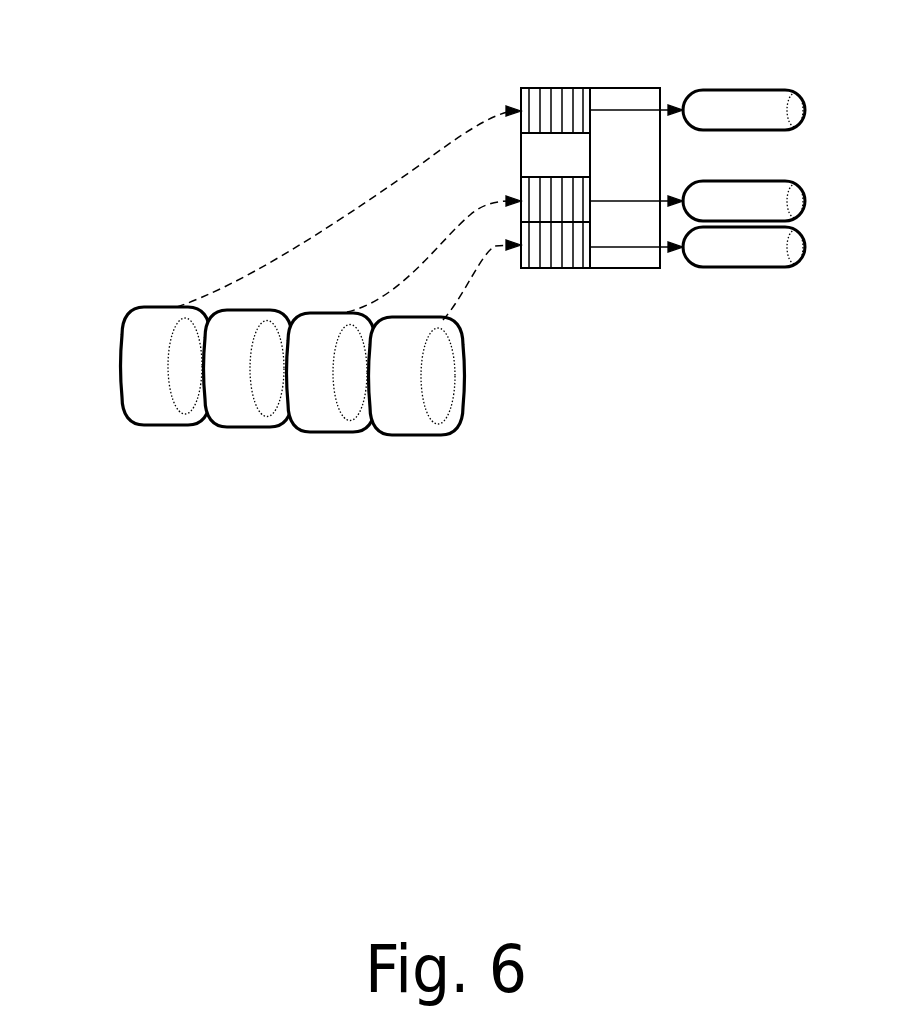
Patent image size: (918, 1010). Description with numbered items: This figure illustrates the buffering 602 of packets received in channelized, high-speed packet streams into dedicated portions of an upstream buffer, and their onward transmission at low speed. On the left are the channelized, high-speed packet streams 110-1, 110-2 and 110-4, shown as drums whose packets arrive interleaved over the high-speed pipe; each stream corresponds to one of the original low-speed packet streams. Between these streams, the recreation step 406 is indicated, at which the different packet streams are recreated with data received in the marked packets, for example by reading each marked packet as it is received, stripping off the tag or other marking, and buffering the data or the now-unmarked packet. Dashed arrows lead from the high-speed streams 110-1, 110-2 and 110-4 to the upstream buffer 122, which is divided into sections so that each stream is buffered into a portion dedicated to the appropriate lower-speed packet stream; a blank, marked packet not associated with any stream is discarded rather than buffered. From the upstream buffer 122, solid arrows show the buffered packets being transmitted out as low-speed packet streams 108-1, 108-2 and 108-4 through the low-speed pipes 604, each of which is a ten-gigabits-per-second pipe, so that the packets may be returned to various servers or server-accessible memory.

The buffering of packets 602 is at (245, 97).
The low-speed pipes 604 is at (774, 66).
The upstream buffer 122 is at (565, 87).
The low-speed packet stream 108-4 is at (744, 110).
The low-speed packet stream 108-2 is at (744, 201).
The low-speed packet stream 108-1 is at (744, 247).
The channelized, high-speed packet stream 110-4 is at (152, 425).
The recreating packet streams step 406 is at (232, 428).
The channelized, high-speed packet stream 110-2 is at (312, 432).
The channelized, high-speed packet stream 110-1 is at (398, 435).